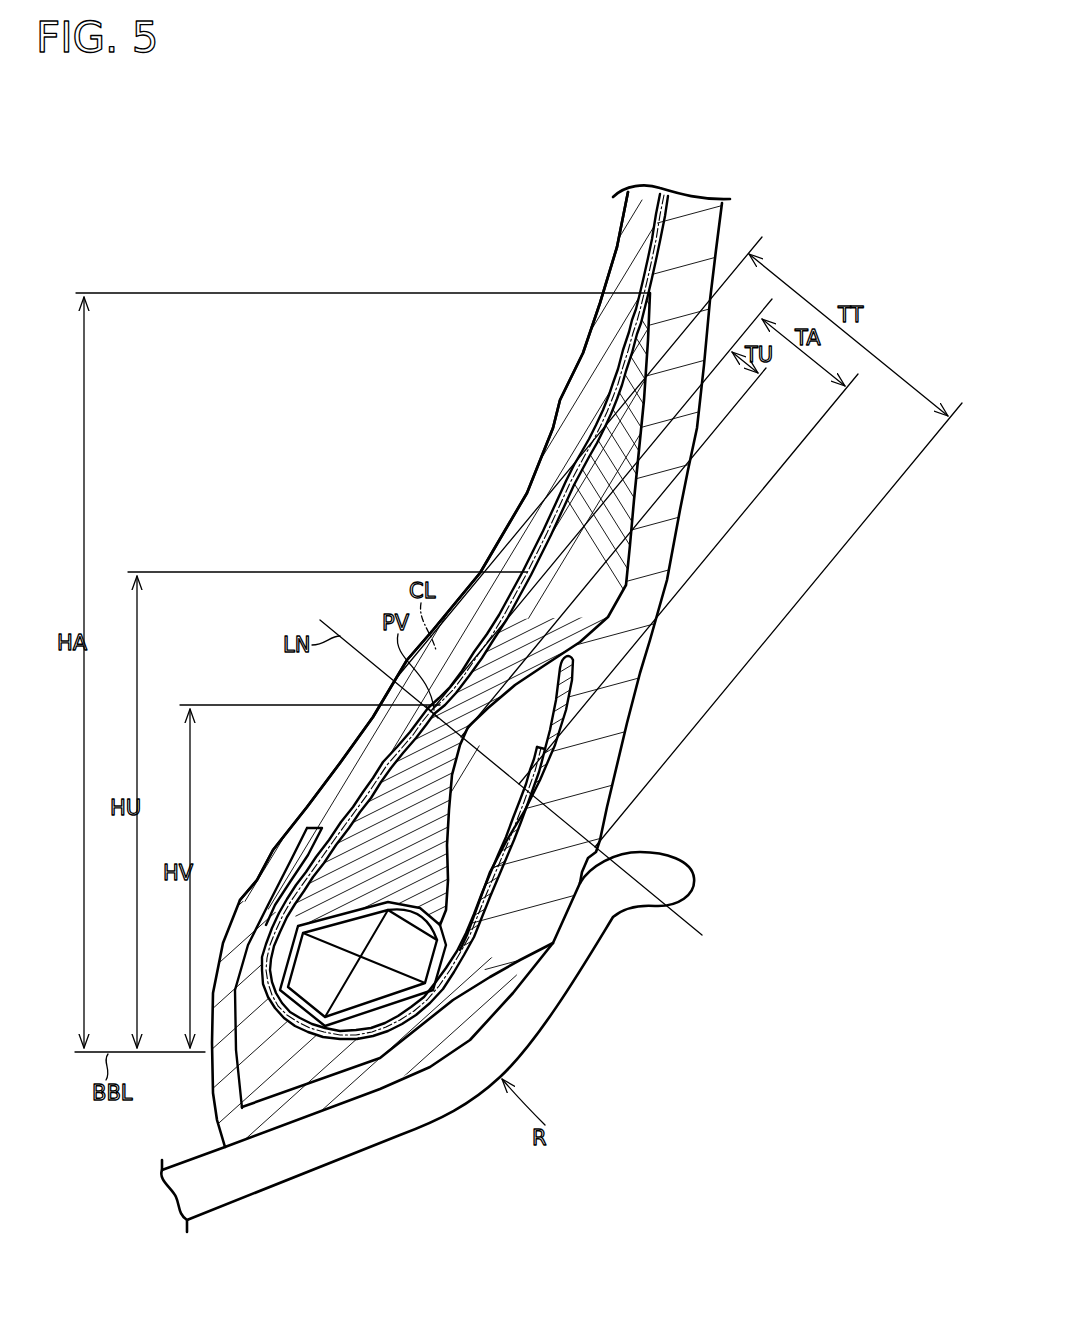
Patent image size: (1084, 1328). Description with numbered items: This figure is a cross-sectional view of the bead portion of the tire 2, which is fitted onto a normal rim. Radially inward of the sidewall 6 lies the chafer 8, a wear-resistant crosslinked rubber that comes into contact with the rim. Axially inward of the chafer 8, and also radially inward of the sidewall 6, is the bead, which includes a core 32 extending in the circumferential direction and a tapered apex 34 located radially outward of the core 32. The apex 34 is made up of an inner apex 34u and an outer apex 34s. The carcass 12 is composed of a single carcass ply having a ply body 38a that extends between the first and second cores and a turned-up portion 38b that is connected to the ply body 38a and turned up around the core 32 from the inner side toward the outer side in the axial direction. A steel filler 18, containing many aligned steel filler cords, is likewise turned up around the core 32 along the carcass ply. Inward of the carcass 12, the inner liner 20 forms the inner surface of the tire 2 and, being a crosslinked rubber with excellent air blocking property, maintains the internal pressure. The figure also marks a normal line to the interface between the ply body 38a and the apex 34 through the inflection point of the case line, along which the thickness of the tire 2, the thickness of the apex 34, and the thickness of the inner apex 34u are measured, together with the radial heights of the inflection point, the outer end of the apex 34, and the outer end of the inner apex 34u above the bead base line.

The tire 2 is at (754, 148).
The sidewall 6 is at (705, 233).
The chafer 8 is at (603, 737).
The carcass 12 is at (465, 615).
The steel filler 18 is at (397, 1037).
The inner liner 20 is at (523, 482).
The core 32 is at (358, 1017).
The apex 34 is at (366, 782).
The outer apex 34s is at (620, 425).
The inner apex 34u is at (363, 830).
The ply body 38a is at (657, 233).
The turned-up portion 38b is at (483, 887).